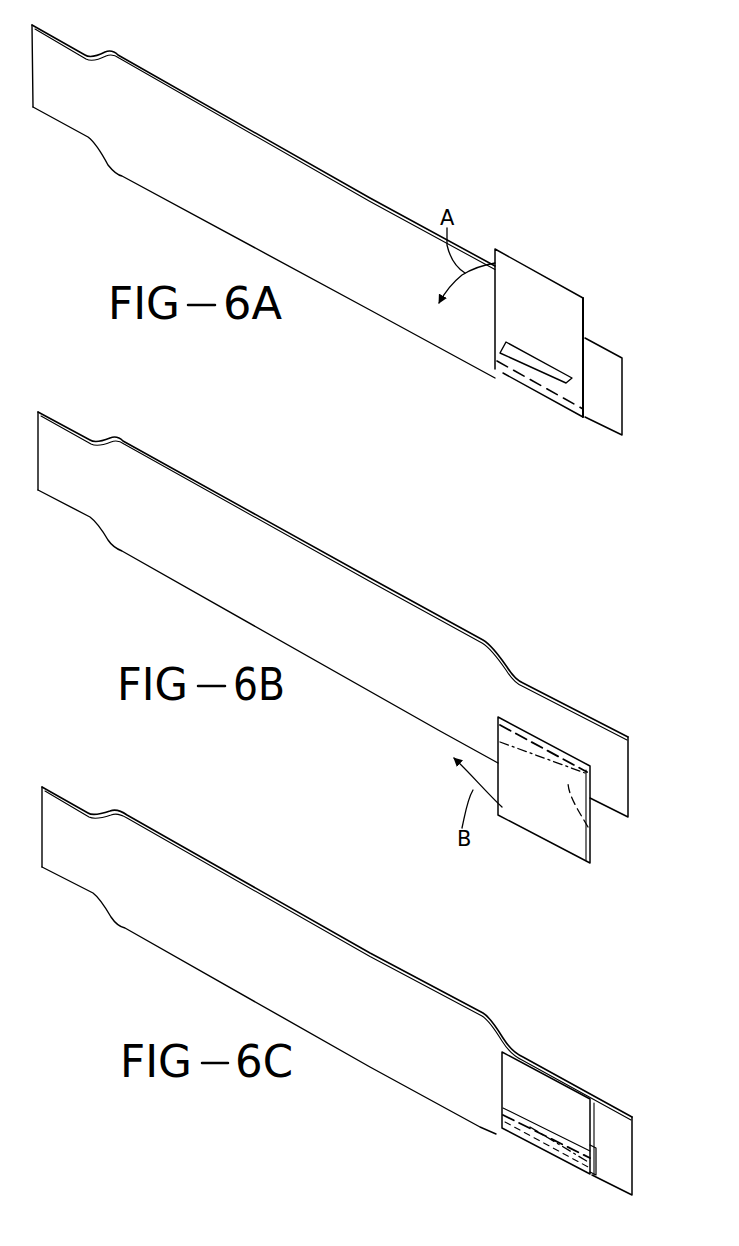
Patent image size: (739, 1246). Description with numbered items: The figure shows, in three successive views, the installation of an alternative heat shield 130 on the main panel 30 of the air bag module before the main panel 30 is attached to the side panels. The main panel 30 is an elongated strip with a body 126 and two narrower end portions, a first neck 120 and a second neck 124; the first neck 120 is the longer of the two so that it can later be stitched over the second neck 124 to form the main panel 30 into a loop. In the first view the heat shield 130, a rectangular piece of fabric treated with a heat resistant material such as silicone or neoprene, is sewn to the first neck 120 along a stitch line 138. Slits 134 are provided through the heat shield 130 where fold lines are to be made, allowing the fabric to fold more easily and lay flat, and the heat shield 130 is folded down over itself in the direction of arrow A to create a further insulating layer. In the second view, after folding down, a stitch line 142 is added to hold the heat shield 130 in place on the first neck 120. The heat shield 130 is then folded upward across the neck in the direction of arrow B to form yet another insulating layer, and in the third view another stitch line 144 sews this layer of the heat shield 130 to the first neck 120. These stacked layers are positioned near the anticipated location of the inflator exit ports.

In FIG. 6A, the main panel 30 is at (361, 184).
In FIG. 6B, the main panel 30 is at (363, 561).
In FIG. 6C, the main panel 30 is at (369, 941).
In FIG. 6A, the first neck 120 is at (608, 385).
In FIG. 6B, the first neck 120 is at (613, 767).
In FIG. 6C, the first neck 120 is at (618, 1145).
In FIG. 6A, the second neck 124 is at (63, 88).
In FIG. 6B, the second neck 124 is at (68, 470).
In FIG. 6C, the second neck 124 is at (72, 847).
In FIG. 6A, the body 126 is at (262, 182).
In FIG. 6B, the body 126 is at (267, 563).
In FIG. 6C, the body 126 is at (270, 938).
In FIG. 6A, the heat shield 130 is at (553, 293).
In FIG. 6B, the heat shield 130 is at (563, 847).
In FIG. 6C, the heat shield 130 is at (573, 1111).
In FIG. 6A, the slits 134 is at (533, 357).
In FIG. 6B, the slits 134 is at (552, 752).
In FIG. 6C, the slits 134 is at (546, 1136).
In FIG. 6A, the stitch line 138 is at (548, 385).
In FIG. 6B, the stitch line 138 is at (588, 827).
In FIG. 6C, the stitch line 138 is at (527, 1134).
In FIG. 6B, the stitch line 142 is at (562, 762).
In FIG. 6C, the stitch line 142 is at (523, 1113).
In FIG. 6C, the stitch line 144 is at (567, 1150).